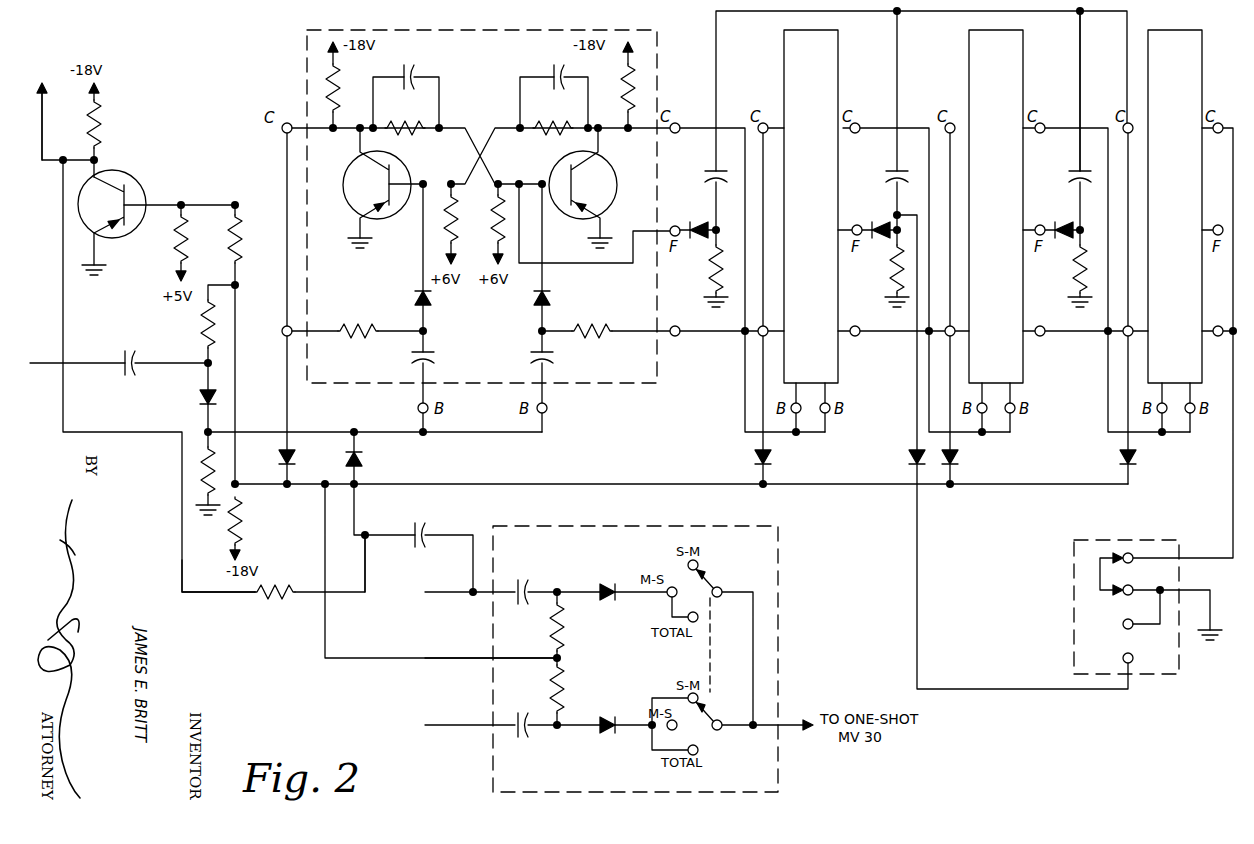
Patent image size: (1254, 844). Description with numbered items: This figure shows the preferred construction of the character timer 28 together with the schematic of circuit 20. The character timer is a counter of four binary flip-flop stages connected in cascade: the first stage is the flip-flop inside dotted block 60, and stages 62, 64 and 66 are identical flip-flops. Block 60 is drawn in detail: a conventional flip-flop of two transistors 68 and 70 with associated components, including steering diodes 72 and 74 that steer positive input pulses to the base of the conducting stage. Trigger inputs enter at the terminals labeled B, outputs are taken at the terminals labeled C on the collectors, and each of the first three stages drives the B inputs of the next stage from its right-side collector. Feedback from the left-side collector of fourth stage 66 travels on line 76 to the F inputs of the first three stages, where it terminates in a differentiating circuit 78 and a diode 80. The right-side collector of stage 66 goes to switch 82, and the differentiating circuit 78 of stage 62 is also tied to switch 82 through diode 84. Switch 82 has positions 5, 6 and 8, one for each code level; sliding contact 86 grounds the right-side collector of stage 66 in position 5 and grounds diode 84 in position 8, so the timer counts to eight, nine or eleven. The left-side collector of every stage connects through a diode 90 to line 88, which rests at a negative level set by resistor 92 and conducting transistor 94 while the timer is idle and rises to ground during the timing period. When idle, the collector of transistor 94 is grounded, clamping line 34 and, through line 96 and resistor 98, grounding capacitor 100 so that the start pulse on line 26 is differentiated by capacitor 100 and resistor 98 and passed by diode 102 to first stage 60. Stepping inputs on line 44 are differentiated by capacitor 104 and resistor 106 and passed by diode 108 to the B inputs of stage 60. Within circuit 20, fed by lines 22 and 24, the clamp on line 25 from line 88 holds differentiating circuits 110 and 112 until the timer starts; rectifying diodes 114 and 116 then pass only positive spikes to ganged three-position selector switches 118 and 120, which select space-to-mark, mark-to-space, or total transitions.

The block 20 is at (672, 527).
The line 22 is at (456, 725).
The line 24 is at (452, 590).
The line 25 is at (456, 658).
The line 26 is at (440, 532).
The character timer 28 is at (226, 138).
The line 34 is at (42, 160).
The line 44 is at (50, 360).
The block 60 is at (328, 28).
The stage 62 is at (811, 206).
The stage 64 is at (996, 206).
The stage 66 is at (1175, 206).
The transistor 68 is at (405, 164).
The transistor 70 is at (556, 162).
The steering diode 72 is at (414, 296).
The steering diode 74 is at (552, 296).
The line 76 is at (1068, 12).
The differentiating circuit 78 is at (700, 198).
The diode 80 is at (694, 224).
The switch 82 is at (1112, 540).
The diode 84 is at (912, 458).
The sliding contact 86 is at (1100, 592).
The line 88 is at (552, 484).
The diode 90 is at (298, 460).
The resistor 92 is at (242, 520).
The transistor 94 is at (134, 170).
The line 96 is at (182, 592).
The resistor 98 is at (280, 600).
The capacitor 100 is at (410, 528).
The diode 102 is at (362, 456).
The capacitor 104 is at (138, 350).
The resistor 106 is at (202, 332).
The diode 108 is at (202, 397).
The differentiating circuit 110 is at (534, 694).
The differentiating circuit 112 is at (534, 616).
The rectifying diode 114 is at (604, 736).
The rectifying diode 116 is at (606, 582).
The selector switch 118 is at (712, 743).
The selector switch 120 is at (716, 570).
The position 5 is at (1089, 570).
The position 6 is at (1089, 603).
The position 8 is at (1089, 653).